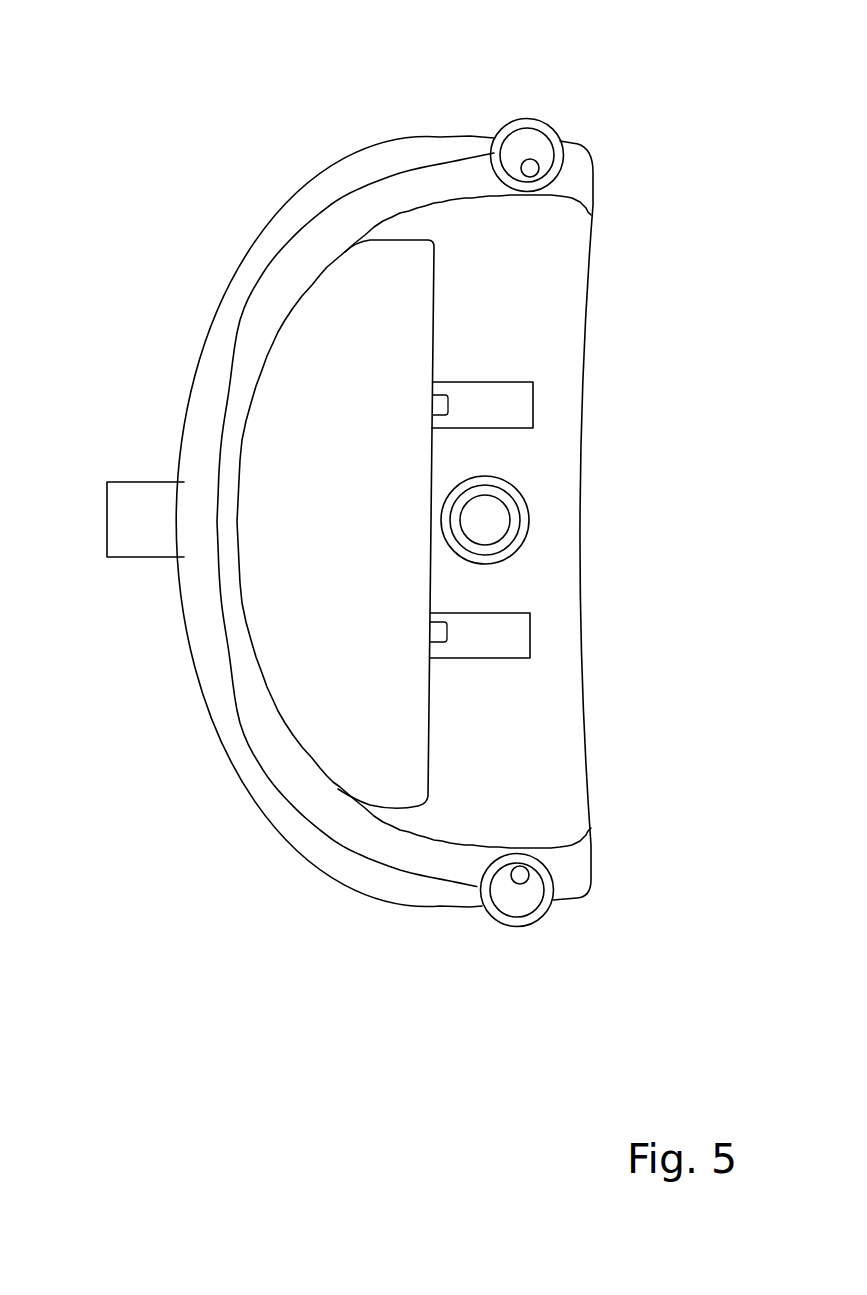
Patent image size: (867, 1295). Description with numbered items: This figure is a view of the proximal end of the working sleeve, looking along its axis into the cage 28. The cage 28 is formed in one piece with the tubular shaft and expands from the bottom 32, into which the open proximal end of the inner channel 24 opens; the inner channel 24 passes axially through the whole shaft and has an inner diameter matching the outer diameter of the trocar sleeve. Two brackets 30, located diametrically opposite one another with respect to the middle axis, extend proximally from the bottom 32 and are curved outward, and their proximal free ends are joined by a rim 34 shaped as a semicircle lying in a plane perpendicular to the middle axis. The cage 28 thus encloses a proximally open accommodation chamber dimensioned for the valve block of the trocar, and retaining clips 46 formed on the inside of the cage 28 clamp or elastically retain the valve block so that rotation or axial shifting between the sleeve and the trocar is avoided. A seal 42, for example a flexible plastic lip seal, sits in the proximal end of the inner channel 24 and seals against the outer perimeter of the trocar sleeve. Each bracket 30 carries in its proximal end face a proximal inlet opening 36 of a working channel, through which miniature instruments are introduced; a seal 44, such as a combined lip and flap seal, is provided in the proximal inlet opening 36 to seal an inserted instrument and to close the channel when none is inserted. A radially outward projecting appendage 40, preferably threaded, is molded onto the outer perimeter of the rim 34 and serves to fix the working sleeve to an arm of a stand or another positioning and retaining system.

The inner channel 24 is at (486, 520).
The cage 28 is at (365, 314).
The brackets 30 is at (402, 193).
The bottom 32 is at (465, 590).
The rim 34 is at (252, 757).
The proximal inlet opening 36 is at (523, 162).
The appendage 40 is at (148, 522).
The seal 42 is at (463, 507).
The seal 44 is at (537, 153).
The retaining clips 46 is at (437, 407).